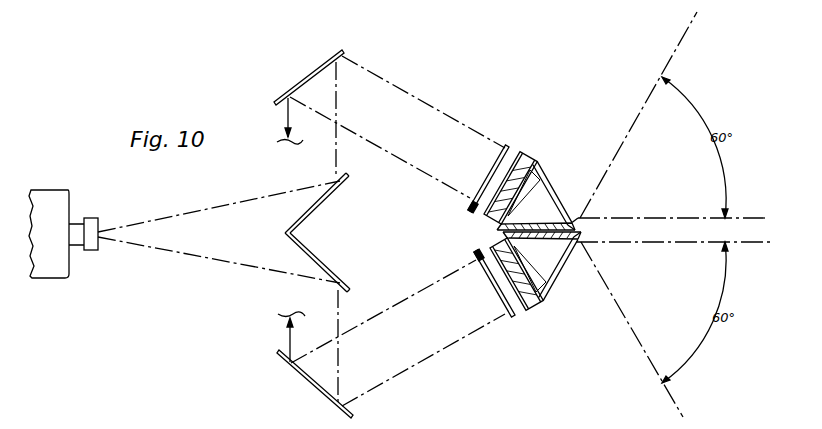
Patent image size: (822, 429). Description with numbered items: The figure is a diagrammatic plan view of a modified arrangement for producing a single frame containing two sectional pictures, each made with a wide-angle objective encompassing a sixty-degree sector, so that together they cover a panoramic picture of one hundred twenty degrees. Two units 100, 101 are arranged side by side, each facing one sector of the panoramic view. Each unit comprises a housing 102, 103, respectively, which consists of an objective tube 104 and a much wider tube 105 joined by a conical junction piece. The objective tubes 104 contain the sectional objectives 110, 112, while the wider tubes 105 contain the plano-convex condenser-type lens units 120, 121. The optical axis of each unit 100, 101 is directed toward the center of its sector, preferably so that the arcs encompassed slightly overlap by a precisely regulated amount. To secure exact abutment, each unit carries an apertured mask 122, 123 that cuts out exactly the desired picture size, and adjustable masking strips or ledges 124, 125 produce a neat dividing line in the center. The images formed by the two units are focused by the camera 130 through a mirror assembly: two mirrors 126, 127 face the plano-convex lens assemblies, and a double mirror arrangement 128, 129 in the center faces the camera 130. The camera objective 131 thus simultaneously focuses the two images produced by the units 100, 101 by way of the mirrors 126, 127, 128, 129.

The unit 100 is at (543, 157).
The unit 101 is at (543, 298).
The housing 102 is at (553, 178).
The housing 103 is at (526, 306).
The objective tube 104 is at (566, 212).
The wider tube 105 is at (523, 158).
The sectional objective 110 is at (576, 214).
The sectional objective 112 is at (574, 237).
The plano-convex lens unit 120 is at (530, 162).
The plano-convex lens unit 121 is at (526, 273).
The apertured mask 122 is at (503, 147).
The apertured mask 123 is at (506, 318).
The adjustable masking strip 124 is at (470, 211).
The adjustable masking strip 125 is at (476, 253).
The mirror 126 is at (303, 79).
The mirror 127 is at (283, 362).
The double mirror 128 is at (325, 204).
The double mirror 129 is at (318, 258).
The camera 130 is at (47, 265).
The camera objective 131 is at (92, 250).